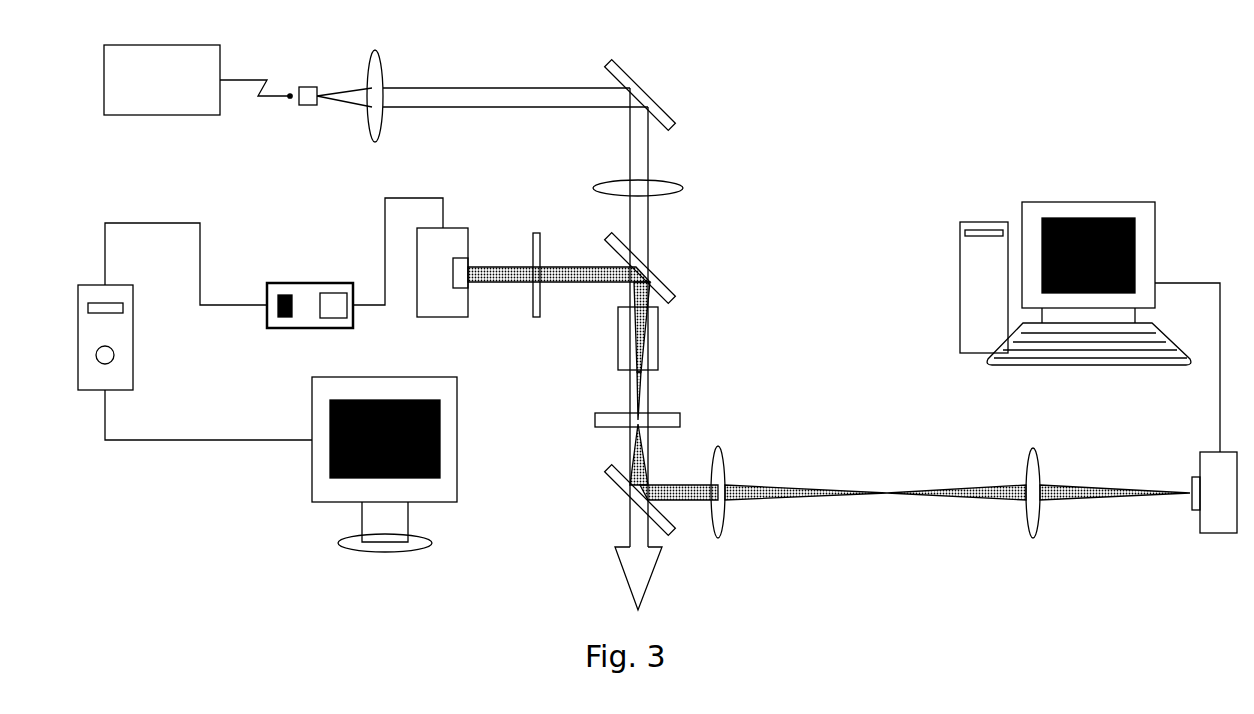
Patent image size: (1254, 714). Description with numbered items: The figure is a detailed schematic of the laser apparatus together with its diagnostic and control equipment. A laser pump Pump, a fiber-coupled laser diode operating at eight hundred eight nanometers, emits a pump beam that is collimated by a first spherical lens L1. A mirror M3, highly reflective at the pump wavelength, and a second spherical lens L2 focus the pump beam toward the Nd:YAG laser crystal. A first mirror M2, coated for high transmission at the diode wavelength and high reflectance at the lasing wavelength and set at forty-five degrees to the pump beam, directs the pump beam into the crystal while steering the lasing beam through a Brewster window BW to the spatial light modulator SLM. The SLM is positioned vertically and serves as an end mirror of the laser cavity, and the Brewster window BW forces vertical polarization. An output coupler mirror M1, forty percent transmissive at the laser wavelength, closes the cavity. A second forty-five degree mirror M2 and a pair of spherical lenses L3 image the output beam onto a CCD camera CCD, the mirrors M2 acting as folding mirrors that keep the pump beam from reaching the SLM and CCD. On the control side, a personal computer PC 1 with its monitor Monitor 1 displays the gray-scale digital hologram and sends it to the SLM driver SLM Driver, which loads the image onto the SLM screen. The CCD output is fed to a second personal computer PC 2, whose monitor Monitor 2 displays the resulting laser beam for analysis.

The laser pump Pump is at (238, 80).
The first spherical lens L1 is at (375, 83).
The mirror M3 is at (640, 94).
The second spherical lens L2 is at (654, 192).
The Brewster window BW is at (537, 262).
The 45° folding mirror M2 is at (633, 384).
The output coupler mirror M1 is at (616, 423).
The spherical lenses L3 is at (878, 509).
The CCD camera CCD is at (1196, 408).
The monitor Monitor 2 is at (1089, 268).
The second personal computer PC 2 is at (985, 275).
The personal computer PC 1 is at (195, 347).
The LCOS-SLM driver SLM Driver is at (355, 263).
The spatial light modulator SLM is at (441, 291).
The monitor Monitor 1 is at (384, 485).